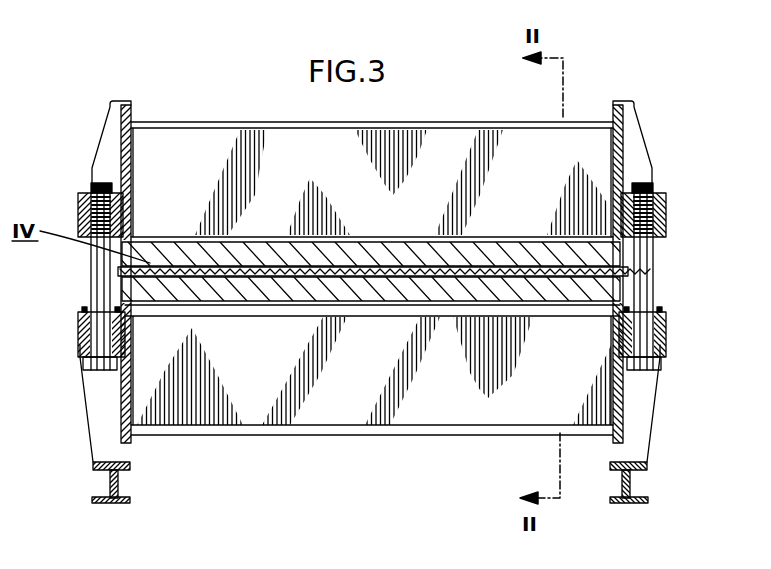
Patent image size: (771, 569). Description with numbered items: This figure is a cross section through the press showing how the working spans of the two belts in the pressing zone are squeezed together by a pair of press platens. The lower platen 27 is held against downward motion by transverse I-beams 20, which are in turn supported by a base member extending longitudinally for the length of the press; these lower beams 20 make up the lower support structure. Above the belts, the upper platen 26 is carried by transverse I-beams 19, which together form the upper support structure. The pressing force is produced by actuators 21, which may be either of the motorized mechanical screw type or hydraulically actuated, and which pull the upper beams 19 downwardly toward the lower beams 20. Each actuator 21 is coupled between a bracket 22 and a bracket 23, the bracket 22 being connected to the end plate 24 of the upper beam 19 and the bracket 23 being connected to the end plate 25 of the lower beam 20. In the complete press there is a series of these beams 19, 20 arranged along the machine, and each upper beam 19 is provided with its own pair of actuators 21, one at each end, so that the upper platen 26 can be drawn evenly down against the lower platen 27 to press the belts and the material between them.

The transverse I-beams 19 is at (172, 124).
The transverse I-beams 20 is at (191, 436).
The actuators 21 is at (92, 302).
The bracket 22 is at (78, 222).
The bracket 23 is at (80, 352).
The end plate 24 is at (128, 141).
The end plate 25 is at (128, 382).
The upper press platen 26 is at (135, 258).
The lower press platen 27 is at (100, 296).